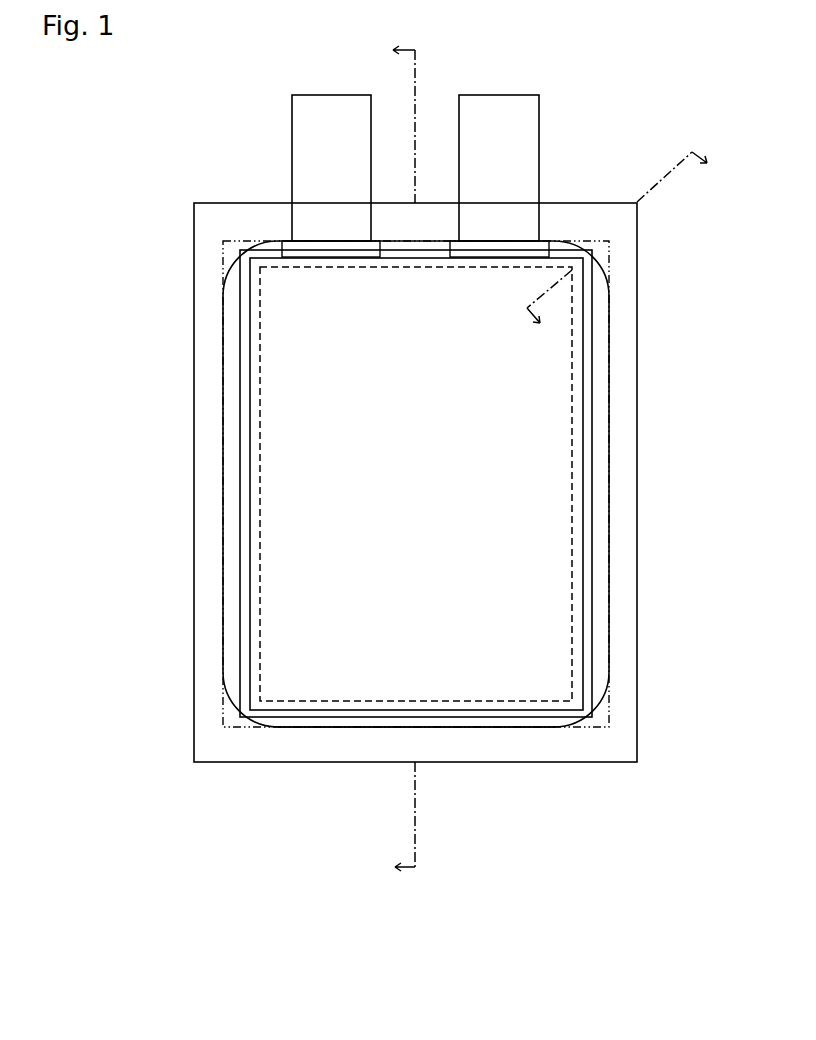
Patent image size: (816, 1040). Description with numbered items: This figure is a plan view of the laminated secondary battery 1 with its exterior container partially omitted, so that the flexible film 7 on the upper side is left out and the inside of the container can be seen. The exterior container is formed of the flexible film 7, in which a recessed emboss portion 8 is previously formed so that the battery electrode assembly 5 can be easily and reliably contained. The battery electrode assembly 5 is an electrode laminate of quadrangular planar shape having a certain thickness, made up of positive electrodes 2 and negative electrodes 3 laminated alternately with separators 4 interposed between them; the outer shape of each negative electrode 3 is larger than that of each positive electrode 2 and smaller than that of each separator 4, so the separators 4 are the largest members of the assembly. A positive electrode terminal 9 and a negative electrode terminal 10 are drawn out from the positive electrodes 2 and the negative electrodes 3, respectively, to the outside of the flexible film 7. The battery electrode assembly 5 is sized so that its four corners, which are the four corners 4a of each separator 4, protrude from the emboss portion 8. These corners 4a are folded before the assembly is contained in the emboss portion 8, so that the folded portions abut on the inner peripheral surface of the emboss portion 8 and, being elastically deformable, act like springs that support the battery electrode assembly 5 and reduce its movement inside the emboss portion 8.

The laminated secondary battery 1 is at (642, 108).
The positive electrode 2 is at (578, 362).
The negative electrode 3 is at (583, 446).
The separator 4 is at (592, 408).
The corner of separator 4a is at (242, 252).
The battery electrode assembly 5 is at (310, 724).
The flexible film 7 is at (625, 627).
The emboss portion 8 is at (224, 300).
The positive electrode terminal 9 is at (305, 125).
The negative electrode terminal 10 is at (525, 137).